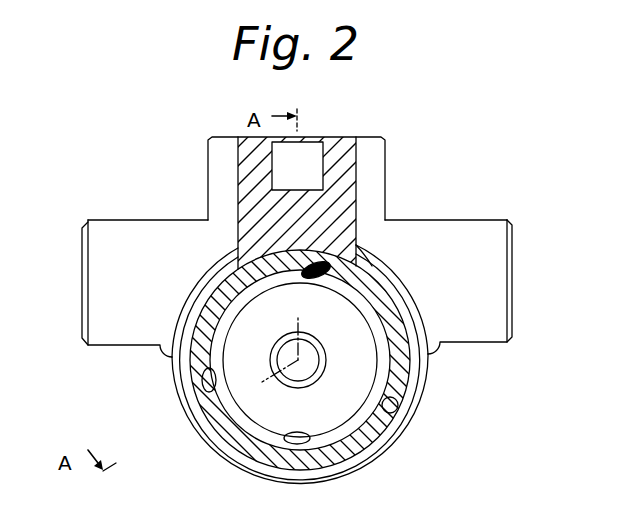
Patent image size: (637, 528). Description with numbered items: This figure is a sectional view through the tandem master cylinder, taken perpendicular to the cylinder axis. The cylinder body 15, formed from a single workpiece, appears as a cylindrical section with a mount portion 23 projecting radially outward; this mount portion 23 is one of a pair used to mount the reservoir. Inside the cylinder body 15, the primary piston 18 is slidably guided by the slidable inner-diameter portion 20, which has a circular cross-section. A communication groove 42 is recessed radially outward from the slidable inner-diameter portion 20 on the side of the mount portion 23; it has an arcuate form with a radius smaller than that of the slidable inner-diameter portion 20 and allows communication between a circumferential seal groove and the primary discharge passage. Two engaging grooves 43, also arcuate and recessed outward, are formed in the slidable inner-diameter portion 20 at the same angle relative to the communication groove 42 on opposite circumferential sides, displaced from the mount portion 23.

The cylinder body 15 is at (108, 215).
The mount portion 23 is at (375, 163).
The communication groove 42 is at (360, 256).
The primary piston 18 is at (388, 310).
The slidable inner-diameter portion 20 is at (240, 471).
The engaging grooves 43 is at (203, 378).